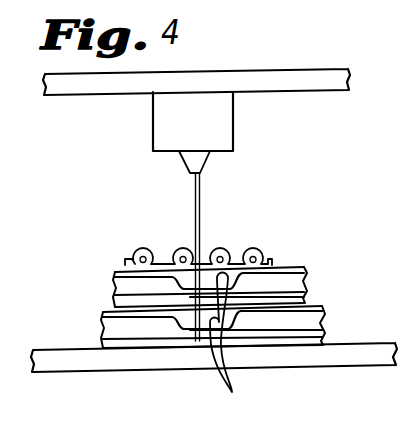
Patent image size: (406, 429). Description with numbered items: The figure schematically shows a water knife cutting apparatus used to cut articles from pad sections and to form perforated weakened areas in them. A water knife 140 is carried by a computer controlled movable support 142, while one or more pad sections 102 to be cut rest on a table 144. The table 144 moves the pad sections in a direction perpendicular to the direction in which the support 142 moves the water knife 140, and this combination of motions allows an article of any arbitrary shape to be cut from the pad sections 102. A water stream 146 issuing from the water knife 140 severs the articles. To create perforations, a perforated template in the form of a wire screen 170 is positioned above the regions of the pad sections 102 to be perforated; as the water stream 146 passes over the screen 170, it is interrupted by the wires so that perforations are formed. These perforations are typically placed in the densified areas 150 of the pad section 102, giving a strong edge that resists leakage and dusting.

The pad section 102 is at (328, 322).
The water knife 140 is at (233, 125).
The support 142 is at (270, 69).
The table 144 is at (371, 343).
The water stream 146 is at (200, 196).
The densified area 150 is at (230, 348).
The wire screen 170 is at (258, 246).